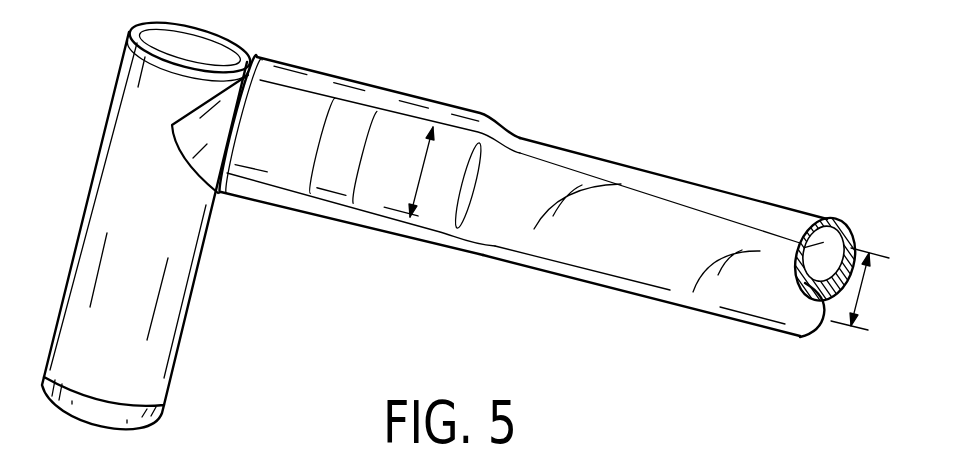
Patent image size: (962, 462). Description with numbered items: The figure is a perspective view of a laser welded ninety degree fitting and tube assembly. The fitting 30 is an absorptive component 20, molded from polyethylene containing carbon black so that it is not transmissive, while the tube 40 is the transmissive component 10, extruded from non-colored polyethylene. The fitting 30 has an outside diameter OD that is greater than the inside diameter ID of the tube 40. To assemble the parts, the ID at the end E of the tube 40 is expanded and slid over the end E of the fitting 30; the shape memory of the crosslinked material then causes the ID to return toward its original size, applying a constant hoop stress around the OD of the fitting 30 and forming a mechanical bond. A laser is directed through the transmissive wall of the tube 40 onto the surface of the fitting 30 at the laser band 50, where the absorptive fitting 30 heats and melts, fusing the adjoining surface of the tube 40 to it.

The transmissive component 10 is at (573, 156).
The absorptive component 20 is at (117, 133).
The fitting 30 is at (97, 237).
The tube 40 is at (670, 191).
The laser band 50 is at (343, 140).
The end E is at (228, 137).
The outside diameter OD is at (420, 168).
The inside diameter ID is at (861, 289).